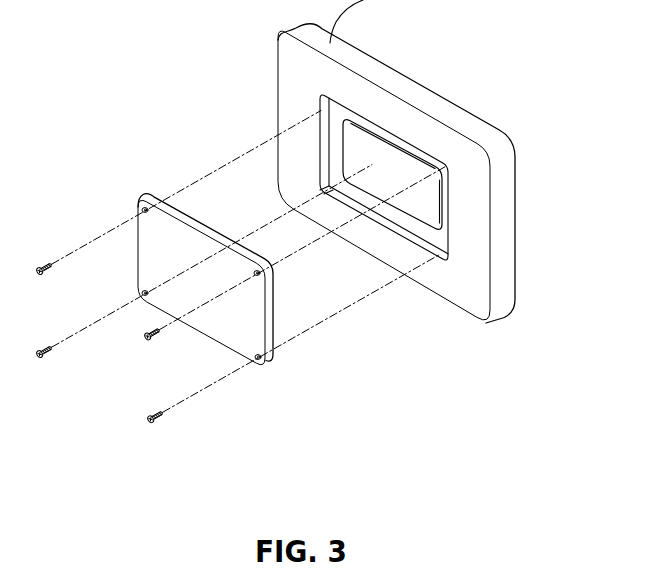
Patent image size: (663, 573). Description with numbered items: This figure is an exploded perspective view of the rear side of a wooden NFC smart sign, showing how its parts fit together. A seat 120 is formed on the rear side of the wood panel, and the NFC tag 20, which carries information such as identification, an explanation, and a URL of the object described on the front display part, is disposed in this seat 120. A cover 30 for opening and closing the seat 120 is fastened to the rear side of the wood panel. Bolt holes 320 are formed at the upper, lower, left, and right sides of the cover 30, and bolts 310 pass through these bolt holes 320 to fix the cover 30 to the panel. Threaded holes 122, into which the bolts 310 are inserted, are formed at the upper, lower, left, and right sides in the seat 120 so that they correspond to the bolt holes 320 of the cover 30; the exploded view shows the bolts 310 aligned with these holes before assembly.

The seat 120 is at (336, 135).
The threaded holes 122 is at (336, 185).
The NFC tag 20 is at (431, 204).
The cover 30 is at (270, 354).
The bolt holes 320 is at (258, 357).
The bolts 310 is at (153, 423).